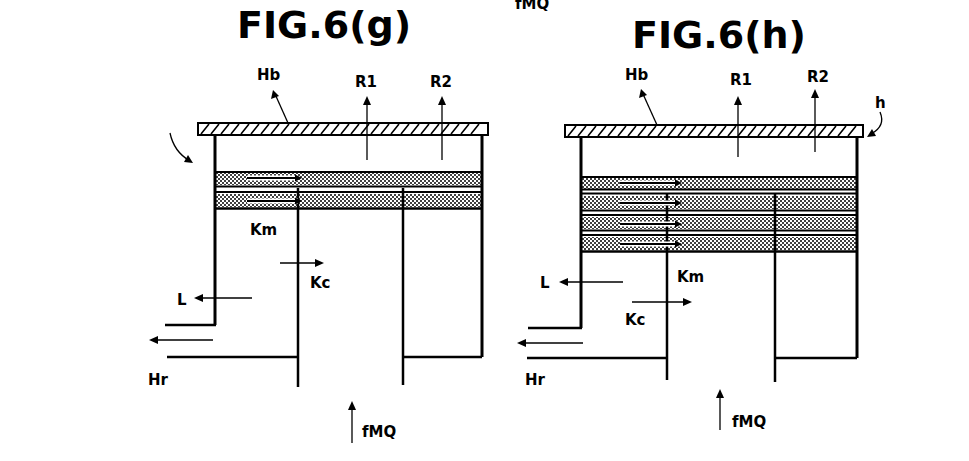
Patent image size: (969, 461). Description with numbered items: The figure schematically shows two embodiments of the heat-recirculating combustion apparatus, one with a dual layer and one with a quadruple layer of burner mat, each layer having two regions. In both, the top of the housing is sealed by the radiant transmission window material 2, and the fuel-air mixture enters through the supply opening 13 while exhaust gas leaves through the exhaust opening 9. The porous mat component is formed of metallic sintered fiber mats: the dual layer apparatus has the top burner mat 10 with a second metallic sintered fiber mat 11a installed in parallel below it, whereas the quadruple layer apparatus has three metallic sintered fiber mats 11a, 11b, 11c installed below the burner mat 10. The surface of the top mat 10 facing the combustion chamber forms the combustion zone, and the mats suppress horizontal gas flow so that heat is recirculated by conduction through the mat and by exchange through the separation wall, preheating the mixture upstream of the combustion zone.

In FIG. 6H, the radiant transmission window material 2 is at (685, 124).
In FIG. 6G, the exhaust opening 9 is at (165, 327).
In FIG. 6H, the exhaust opening 9 is at (530, 335).
In FIG. 6G, the metallic sintered fiber mat 10 is at (482, 182).
In FIG. 6H, the metallic sintered fiber mat 10 is at (858, 182).
In FIG. 6G, the metallic sintered fiber mat 11a is at (482, 203).
In FIG. 6H, the metallic sintered fiber mat 11a is at (858, 202).
In FIG. 6H, the metallic sintered fiber mat 11b is at (858, 222).
In FIG. 6H, the metallic sintered fiber mat 11c is at (858, 245).
In FIG. 6G, the supply opening 13 is at (387, 382).
In FIG. 6H, the supply opening 13 is at (760, 375).